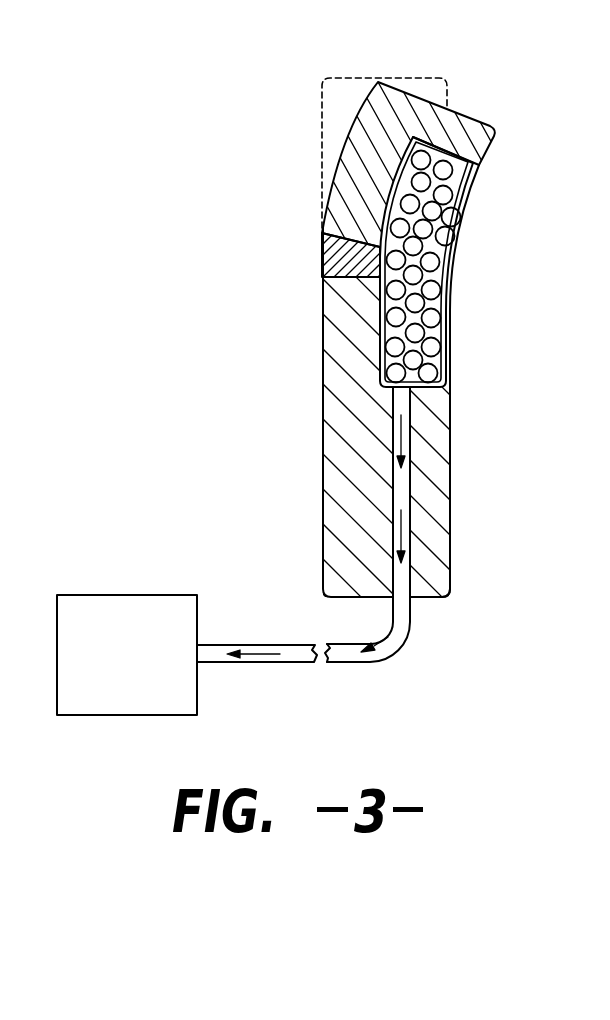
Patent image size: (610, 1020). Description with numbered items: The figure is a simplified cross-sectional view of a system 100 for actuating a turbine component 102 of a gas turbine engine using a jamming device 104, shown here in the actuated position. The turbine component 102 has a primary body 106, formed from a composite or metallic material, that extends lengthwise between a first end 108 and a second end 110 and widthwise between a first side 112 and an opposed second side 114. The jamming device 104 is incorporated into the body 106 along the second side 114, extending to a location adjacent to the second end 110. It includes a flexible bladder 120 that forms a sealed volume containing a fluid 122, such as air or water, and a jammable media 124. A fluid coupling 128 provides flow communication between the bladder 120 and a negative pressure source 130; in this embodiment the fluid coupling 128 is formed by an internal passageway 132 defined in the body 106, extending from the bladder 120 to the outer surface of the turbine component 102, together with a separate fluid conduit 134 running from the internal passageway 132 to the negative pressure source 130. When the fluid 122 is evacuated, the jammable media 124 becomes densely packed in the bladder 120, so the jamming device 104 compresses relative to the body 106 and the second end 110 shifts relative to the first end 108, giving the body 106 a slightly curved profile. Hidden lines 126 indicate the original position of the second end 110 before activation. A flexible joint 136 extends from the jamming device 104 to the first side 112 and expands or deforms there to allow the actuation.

The system 100 is at (200, 161).
The turbine component 102 is at (240, 353).
The jamming device 104 is at (457, 234).
The primary body 106 is at (338, 498).
The first end 108 is at (425, 598).
The second end 110 is at (472, 125).
The first side 112 is at (335, 338).
The second side 114 is at (452, 468).
The flexible bladder 120 is at (457, 280).
The fluid 122 is at (402, 430).
The jammable media 124 is at (460, 206).
The hidden lines 126 is at (361, 78).
The fluid coupling 128 is at (369, 672).
The negative pressure source 130 is at (147, 670).
The internal passageway 132 is at (413, 517).
The fluid conduit 134 is at (302, 645).
The flexible joint 136 is at (345, 257).